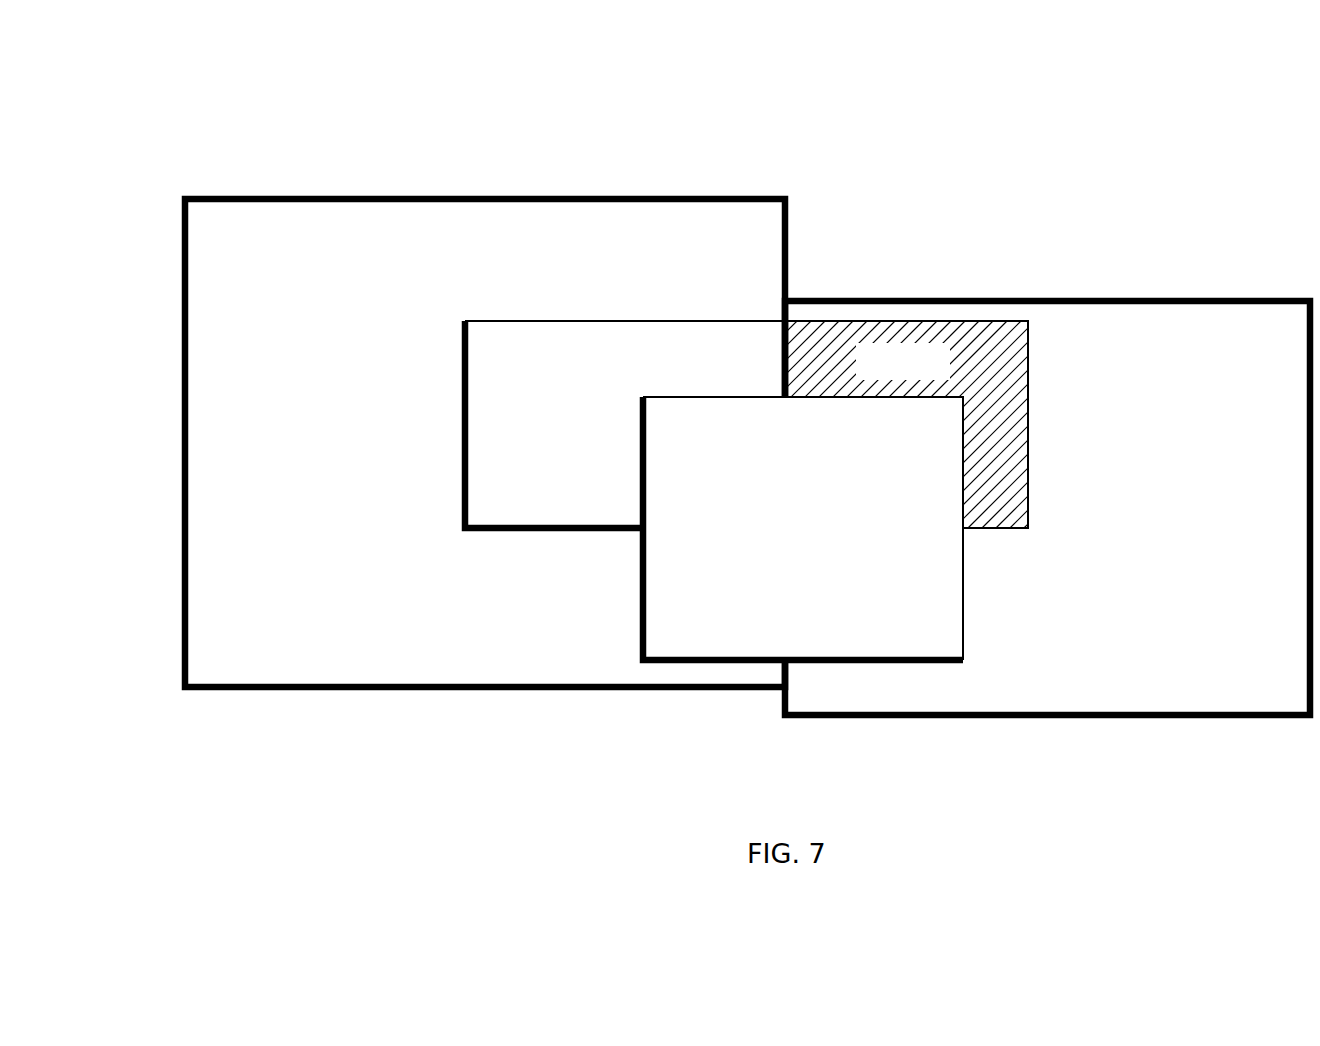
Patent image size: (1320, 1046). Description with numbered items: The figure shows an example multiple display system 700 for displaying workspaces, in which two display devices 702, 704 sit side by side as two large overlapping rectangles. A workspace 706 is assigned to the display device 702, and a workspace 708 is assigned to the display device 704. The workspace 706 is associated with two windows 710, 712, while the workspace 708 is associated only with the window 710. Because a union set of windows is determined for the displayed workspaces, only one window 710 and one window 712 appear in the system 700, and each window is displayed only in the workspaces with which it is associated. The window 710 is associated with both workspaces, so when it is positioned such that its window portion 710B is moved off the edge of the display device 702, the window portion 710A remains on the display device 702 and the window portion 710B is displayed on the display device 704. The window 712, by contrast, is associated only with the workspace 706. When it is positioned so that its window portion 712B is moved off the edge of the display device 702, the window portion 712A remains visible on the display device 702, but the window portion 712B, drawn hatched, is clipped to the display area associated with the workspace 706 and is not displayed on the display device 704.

The multiple display system 700 is at (592, 108).
The display device 702 is at (182, 240).
The display device 704 is at (1027, 299).
The workspace 706 is at (256, 240).
The workspace 708 is at (1211, 354).
The window 710 is at (640, 637).
The window portion 710A is at (726, 522).
The window portion 710B is at (866, 522).
The window 712 is at (462, 415).
The window portion 712A is at (556, 411).
The window portion 712B is at (910, 424).